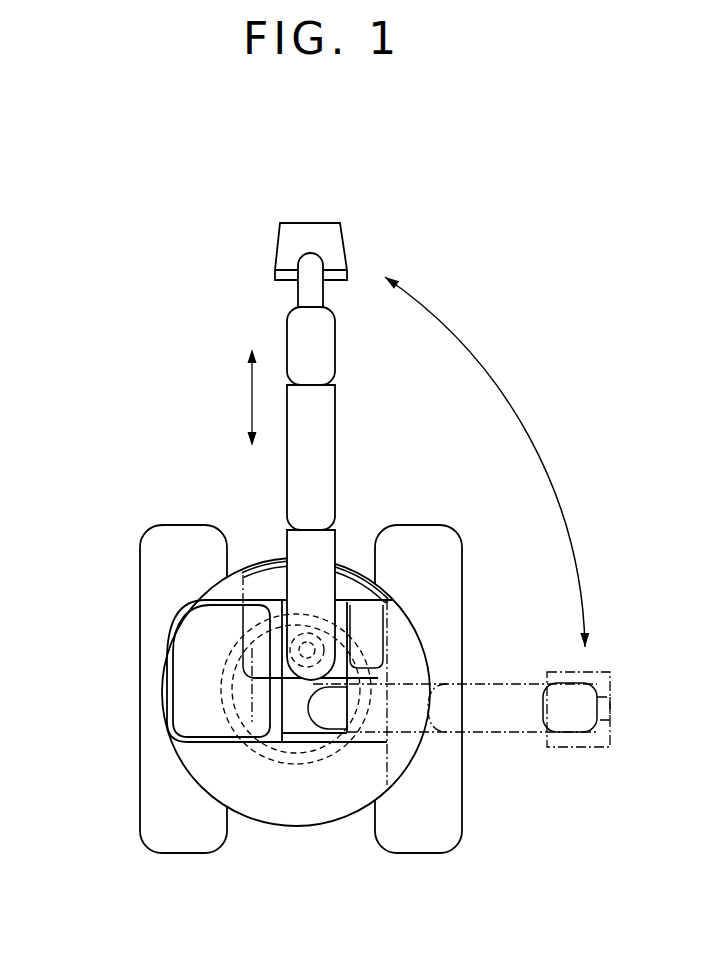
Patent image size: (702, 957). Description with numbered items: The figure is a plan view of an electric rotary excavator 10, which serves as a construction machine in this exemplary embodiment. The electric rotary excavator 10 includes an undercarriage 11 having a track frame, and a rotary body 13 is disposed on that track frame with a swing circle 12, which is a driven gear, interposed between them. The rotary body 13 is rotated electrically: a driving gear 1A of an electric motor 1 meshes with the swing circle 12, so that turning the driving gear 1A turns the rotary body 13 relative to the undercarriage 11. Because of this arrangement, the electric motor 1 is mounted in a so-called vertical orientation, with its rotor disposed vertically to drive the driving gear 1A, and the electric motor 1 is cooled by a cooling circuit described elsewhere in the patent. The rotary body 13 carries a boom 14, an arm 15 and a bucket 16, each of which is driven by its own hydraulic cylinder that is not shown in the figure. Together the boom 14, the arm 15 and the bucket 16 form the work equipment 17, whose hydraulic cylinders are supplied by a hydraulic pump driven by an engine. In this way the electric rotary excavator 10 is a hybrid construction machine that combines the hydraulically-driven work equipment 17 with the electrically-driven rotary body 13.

The electric rotary excavator 10 is at (108, 240).
The undercarriage 11 is at (142, 817).
The swing circle 12 is at (262, 752).
The rotary body 13 is at (342, 812).
The boom 14 is at (287, 335).
The arm 15 is at (297, 290).
The bucket 16 is at (278, 242).
The work equipment 17 is at (170, 230).
The electric motor 1 is at (327, 640).
The driving gear 1A is at (290, 628).